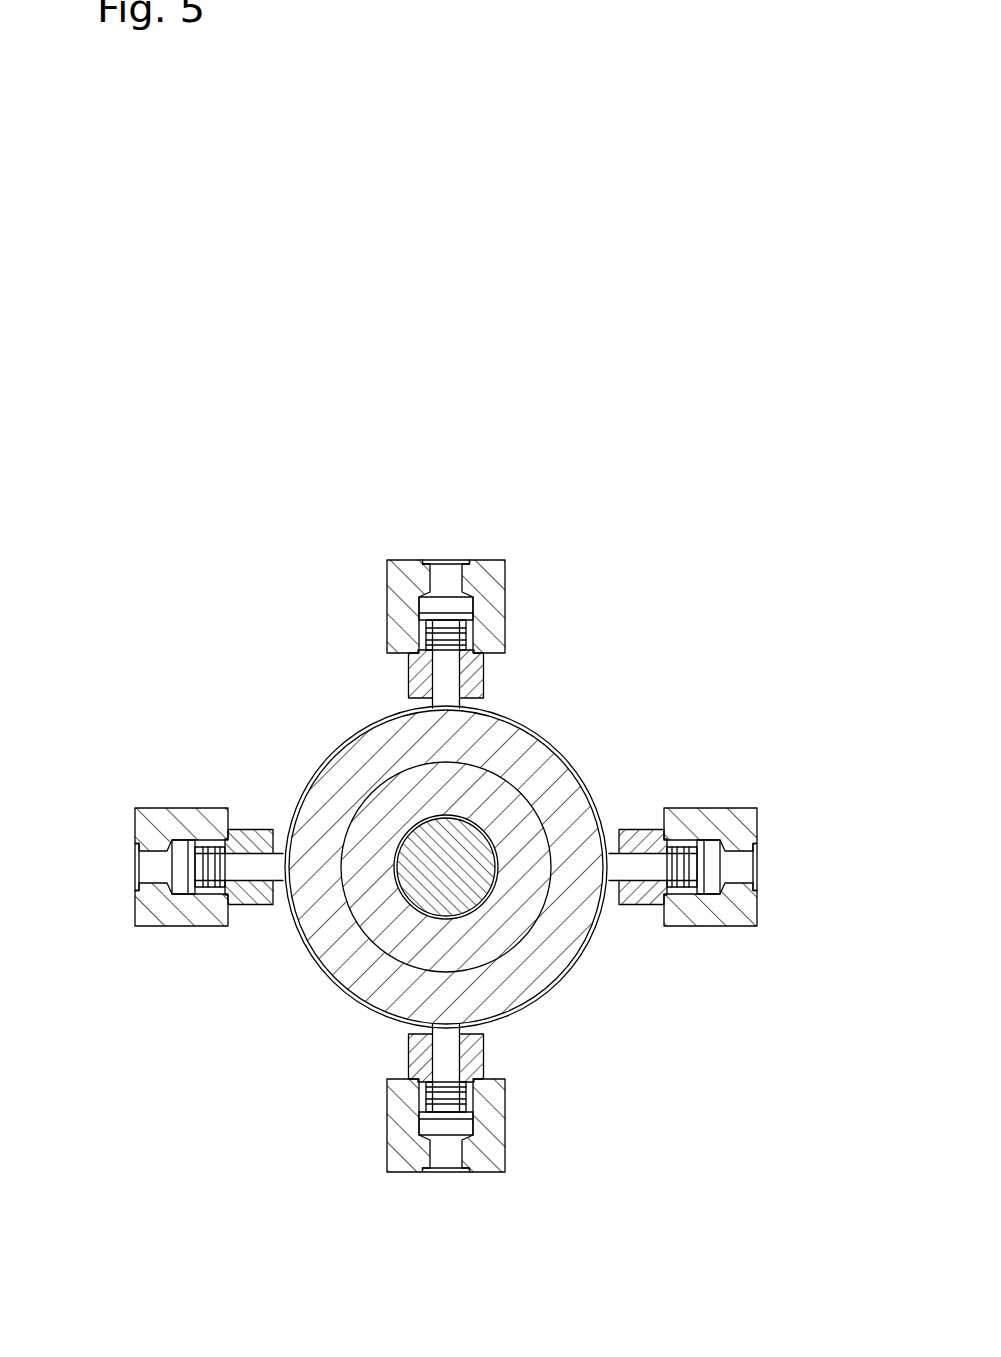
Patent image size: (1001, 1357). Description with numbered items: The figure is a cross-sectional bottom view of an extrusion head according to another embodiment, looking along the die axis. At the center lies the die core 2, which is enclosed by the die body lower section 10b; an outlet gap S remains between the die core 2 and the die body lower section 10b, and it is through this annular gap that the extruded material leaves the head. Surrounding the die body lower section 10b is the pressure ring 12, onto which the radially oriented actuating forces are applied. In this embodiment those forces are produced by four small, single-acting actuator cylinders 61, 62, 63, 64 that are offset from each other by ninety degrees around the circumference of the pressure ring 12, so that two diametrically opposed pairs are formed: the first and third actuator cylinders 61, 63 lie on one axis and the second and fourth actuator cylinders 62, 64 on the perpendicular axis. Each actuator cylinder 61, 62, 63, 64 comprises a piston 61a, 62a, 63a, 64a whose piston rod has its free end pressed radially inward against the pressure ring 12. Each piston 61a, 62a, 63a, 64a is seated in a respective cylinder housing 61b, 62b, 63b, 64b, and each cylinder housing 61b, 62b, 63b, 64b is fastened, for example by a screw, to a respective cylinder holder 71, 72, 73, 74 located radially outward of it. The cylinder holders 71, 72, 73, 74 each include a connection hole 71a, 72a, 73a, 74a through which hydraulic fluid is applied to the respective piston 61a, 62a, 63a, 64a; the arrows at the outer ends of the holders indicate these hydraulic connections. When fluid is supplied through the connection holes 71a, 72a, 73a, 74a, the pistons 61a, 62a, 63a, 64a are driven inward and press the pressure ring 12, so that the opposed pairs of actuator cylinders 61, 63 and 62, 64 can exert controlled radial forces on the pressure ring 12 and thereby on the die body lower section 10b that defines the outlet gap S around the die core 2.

The die core 2 is at (437, 887).
The die body lower section 10b is at (397, 812).
The pressure ring 12 is at (562, 943).
The outlet gap S is at (518, 785).
The actuator cylinder 61 is at (261, 920).
The piston 61a is at (160, 913).
The cylinder housing 61b is at (242, 908).
The actuator cylinder 62 is at (396, 686).
The piston 62a is at (442, 627).
The cylinder housing 62b is at (405, 652).
The actuator cylinder 63 is at (631, 813).
The piston 63a is at (718, 838).
The cylinder housing 63b is at (650, 826).
The actuator cylinder 64 is at (494, 1046).
The piston 64a is at (455, 1125).
The cylinder housing 64b is at (480, 1068).
The cylinder holder 71 is at (153, 808).
The connection hole 71a is at (126, 866).
The cylinder holder 72 is at (495, 575).
The connection hole 72a is at (445, 552).
The cylinder holder 73 is at (710, 913).
The connection hole 73a is at (766, 866).
The cylinder holder 74 is at (407, 1147).
The connection hole 74a is at (445, 1180).